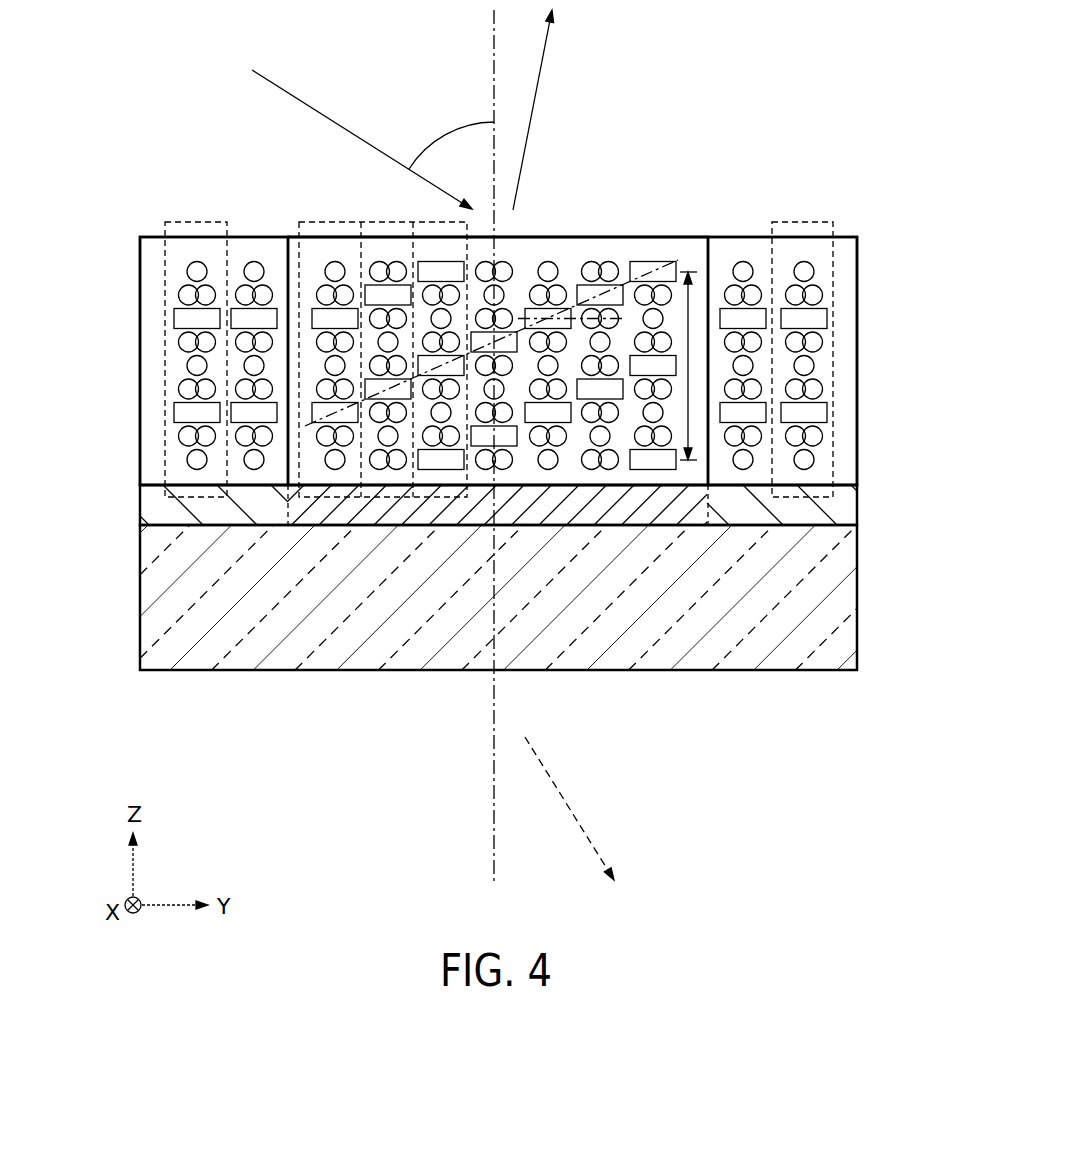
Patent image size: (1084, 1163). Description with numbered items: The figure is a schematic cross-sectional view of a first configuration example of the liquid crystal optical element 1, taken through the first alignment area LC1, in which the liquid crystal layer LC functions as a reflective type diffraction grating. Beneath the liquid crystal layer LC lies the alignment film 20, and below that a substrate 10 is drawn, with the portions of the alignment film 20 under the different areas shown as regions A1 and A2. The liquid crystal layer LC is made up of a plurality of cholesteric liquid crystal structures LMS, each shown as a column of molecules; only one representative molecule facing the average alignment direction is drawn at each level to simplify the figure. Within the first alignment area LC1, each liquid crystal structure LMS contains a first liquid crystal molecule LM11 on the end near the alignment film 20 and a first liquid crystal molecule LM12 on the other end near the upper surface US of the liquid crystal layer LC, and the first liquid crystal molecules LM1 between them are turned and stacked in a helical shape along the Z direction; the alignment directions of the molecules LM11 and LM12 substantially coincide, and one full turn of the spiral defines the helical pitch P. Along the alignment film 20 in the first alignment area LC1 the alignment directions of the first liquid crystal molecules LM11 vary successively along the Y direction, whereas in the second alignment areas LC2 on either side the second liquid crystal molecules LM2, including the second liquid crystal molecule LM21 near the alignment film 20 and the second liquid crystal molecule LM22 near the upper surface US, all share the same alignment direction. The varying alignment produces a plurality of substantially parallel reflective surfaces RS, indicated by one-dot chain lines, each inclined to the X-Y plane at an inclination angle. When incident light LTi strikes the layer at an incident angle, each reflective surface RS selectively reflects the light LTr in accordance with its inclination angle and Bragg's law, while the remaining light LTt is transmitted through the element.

The liquid crystal optical element 1 is at (505, 459).
The substrate 10 is at (857, 622).
The alignment film 20 is at (532, 533).
The liquid crystal layer LC is at (858, 297).
The first alignment area LC1 is at (700, 237).
The second alignment area LC2 is at (142, 292).
The first liquid crystal molecules LM1 is at (322, 255).
The second liquid crystal molecules LM2 is at (830, 253).
The first liquid crystal molecule LM11 is at (441, 470).
The first liquid crystal molecule LM12 is at (438, 256).
The second liquid crystal molecule LM21 is at (247, 454).
The second liquid crystal molecule LM22 is at (253, 260).
The liquid crystal structure LMS is at (165, 222).
The first area of alignment film A1 is at (594, 517).
The second area of alignment film A2 is at (220, 517).
The upper surface US is at (548, 237).
The reflective surface RS is at (616, 290).
The helical pitch P is at (692, 366).
The incident light LTi is at (362, 128).
The reflected light LTr is at (552, 110).
The transmitted light LTt is at (590, 811).